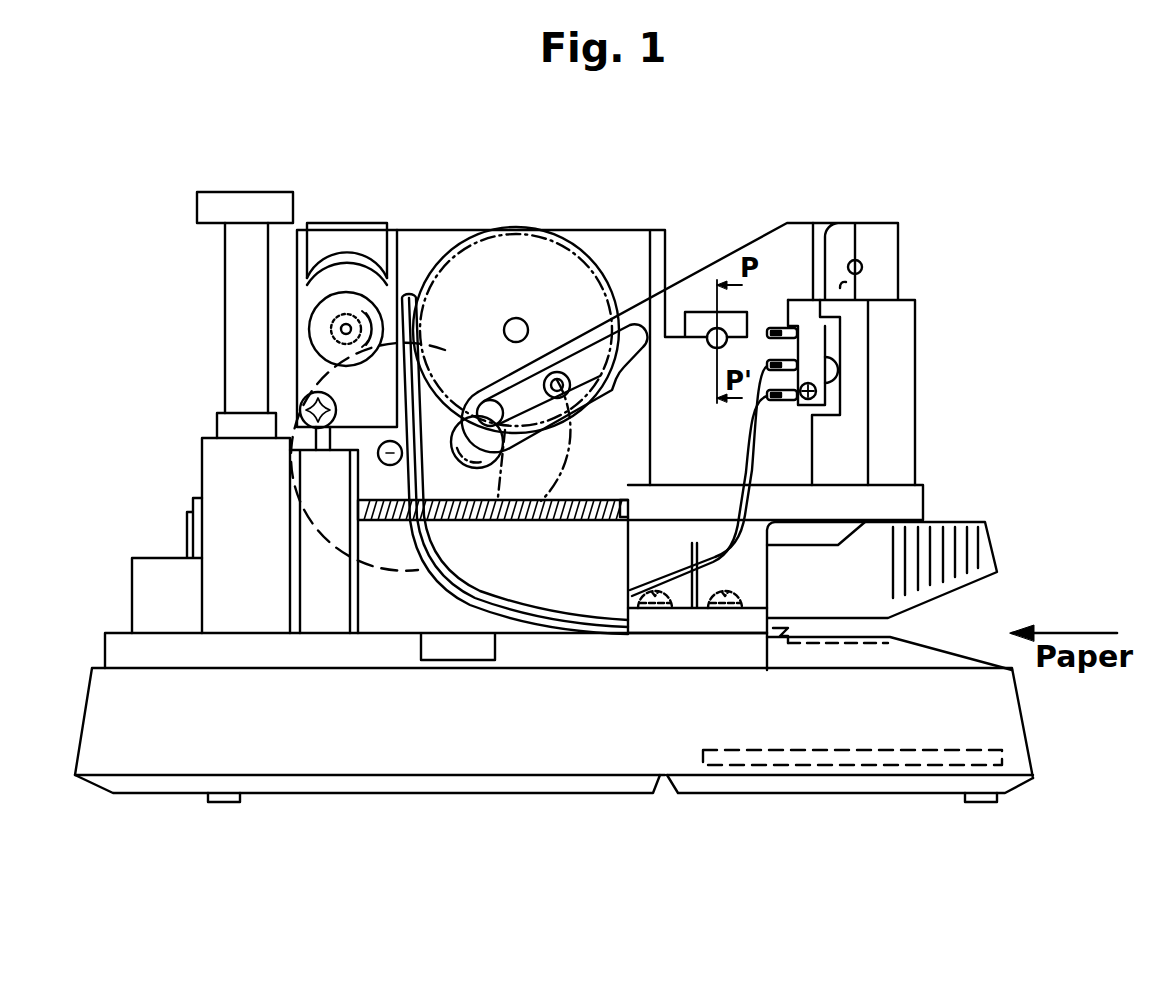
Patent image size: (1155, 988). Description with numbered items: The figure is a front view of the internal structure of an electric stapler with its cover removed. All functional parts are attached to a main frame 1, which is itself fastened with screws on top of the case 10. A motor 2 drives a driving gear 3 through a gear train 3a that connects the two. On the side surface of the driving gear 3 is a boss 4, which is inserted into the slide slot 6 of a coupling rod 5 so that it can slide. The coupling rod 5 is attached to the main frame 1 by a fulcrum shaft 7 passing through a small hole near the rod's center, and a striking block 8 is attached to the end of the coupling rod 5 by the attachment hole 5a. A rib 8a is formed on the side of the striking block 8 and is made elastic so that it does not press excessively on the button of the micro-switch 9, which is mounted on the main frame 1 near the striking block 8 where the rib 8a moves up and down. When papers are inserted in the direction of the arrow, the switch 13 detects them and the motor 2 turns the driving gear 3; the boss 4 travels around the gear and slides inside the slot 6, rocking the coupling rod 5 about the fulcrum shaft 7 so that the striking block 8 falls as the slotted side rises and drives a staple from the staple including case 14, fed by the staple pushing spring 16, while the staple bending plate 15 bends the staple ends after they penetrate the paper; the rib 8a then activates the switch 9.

The main frame 1 is at (613, 243).
The motor 2 is at (339, 316).
The driving gear 3 is at (480, 281).
The gear train 3a is at (479, 488).
The boss 4 is at (556, 384).
The coupling rod 5 is at (690, 300).
The attachment hole 5a is at (862, 265).
The slide slot 6 is at (488, 408).
The fulcrum shaft 7 is at (720, 335).
The striking block 8 is at (887, 239).
The rib 8a is at (846, 282).
The micro-switch 9 is at (818, 395).
The case 10 is at (199, 753).
The switch 13 is at (783, 643).
The staple including case 14 is at (992, 548).
The staple bending plate 15 is at (867, 645).
The staple pushing spring 16 is at (566, 515).